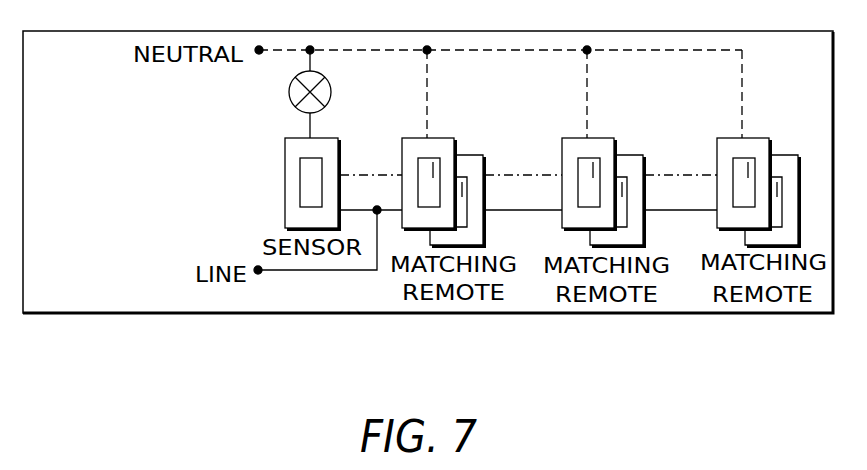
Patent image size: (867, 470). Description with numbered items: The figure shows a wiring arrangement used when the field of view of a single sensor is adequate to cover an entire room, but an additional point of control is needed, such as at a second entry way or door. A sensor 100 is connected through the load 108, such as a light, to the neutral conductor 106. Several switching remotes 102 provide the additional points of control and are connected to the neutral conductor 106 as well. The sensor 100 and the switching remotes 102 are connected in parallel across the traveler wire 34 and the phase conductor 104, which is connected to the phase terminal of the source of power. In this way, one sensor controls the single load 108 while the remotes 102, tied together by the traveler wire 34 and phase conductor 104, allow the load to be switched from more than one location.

The traveler wire 34 is at (348, 173).
The sensor 100 is at (285, 186).
The sensor remote 102 is at (436, 138).
The phase conductor 104 is at (493, 210).
The neutral conductor 106 is at (343, 52).
The load 108 is at (291, 84).